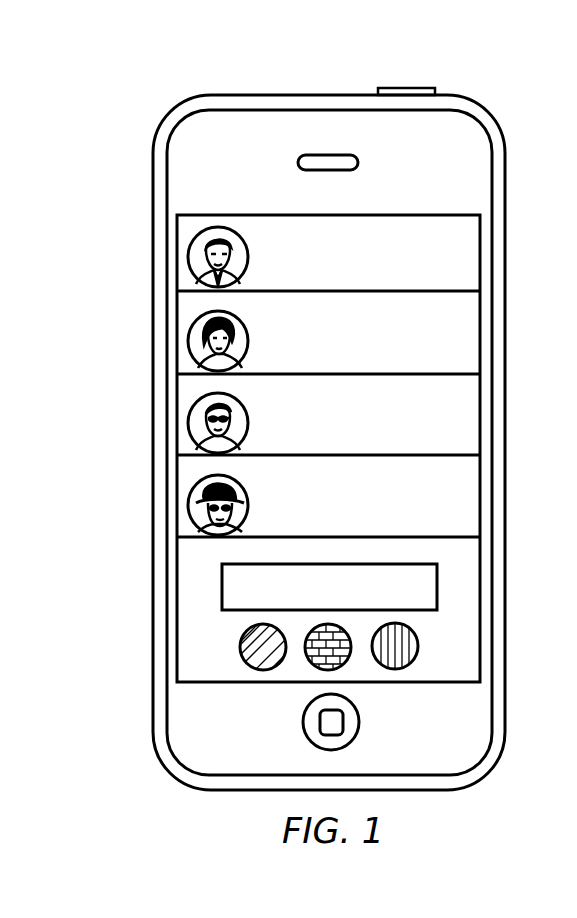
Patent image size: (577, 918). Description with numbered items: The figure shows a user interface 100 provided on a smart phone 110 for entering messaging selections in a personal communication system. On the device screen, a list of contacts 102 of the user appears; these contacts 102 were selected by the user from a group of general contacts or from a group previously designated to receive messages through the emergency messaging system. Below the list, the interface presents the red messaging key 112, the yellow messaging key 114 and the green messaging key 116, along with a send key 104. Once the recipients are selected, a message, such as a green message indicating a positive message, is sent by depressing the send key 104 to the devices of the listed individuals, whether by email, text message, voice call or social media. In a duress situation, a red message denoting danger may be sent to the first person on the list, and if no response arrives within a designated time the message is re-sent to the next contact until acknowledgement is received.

The user interface 100 is at (457, 290).
The contacts 102 is at (385, 220).
The send key 104 is at (437, 594).
The smart phone 110 is at (176, 26).
The red messaging key 112 is at (418, 646).
The yellow messaging key 114 is at (338, 668).
The green messaging key 116 is at (240, 647).